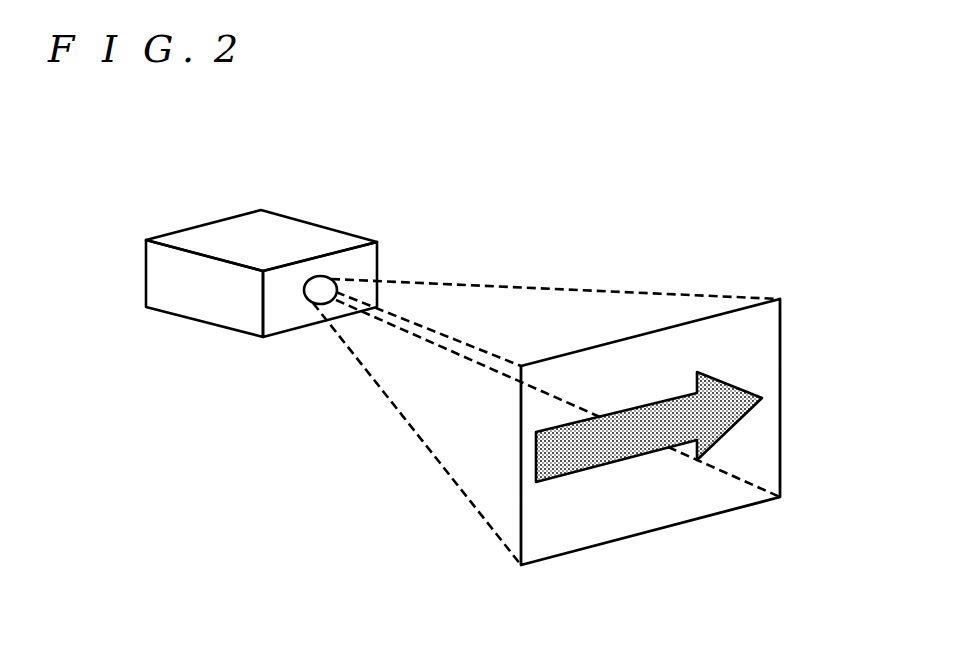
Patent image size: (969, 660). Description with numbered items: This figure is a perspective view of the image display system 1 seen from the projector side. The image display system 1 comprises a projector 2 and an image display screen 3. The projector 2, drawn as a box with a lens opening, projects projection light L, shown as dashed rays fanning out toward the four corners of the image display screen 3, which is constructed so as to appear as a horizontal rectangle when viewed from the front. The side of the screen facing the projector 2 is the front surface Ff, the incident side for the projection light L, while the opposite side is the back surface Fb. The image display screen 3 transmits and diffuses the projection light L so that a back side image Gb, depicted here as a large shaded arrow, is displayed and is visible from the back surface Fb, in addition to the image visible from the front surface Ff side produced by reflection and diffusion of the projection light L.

The image display system 1 is at (506, 195).
The projector 2 is at (273, 212).
The image display screen 3 is at (772, 298).
The projection light L is at (548, 343).
The back side image Gb is at (747, 377).
The front surface Ff is at (548, 514).
The back surface Fb is at (568, 540).